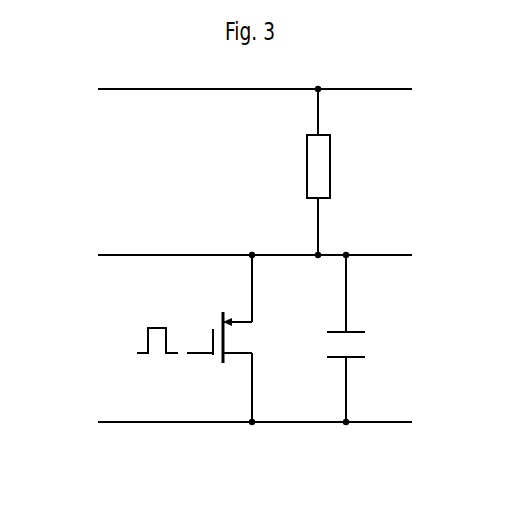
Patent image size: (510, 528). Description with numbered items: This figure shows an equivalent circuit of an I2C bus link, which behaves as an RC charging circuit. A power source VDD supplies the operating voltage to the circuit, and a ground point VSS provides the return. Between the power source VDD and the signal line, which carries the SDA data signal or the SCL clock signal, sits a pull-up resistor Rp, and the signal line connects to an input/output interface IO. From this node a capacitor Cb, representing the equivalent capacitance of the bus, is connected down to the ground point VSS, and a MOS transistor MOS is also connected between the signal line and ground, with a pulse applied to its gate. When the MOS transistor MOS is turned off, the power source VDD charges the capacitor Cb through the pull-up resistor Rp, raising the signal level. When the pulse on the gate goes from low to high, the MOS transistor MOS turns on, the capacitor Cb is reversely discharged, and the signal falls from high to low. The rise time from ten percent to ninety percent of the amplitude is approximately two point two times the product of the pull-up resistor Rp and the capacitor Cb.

The power source VDD is at (255, 109).
The ground point VSS is at (255, 442).
The pull-up resistor Rp is at (297, 170).
The input/output interface IO is at (336, 241).
The capacitor Cb is at (367, 340).
The MOS transistor MOS is at (196, 338).